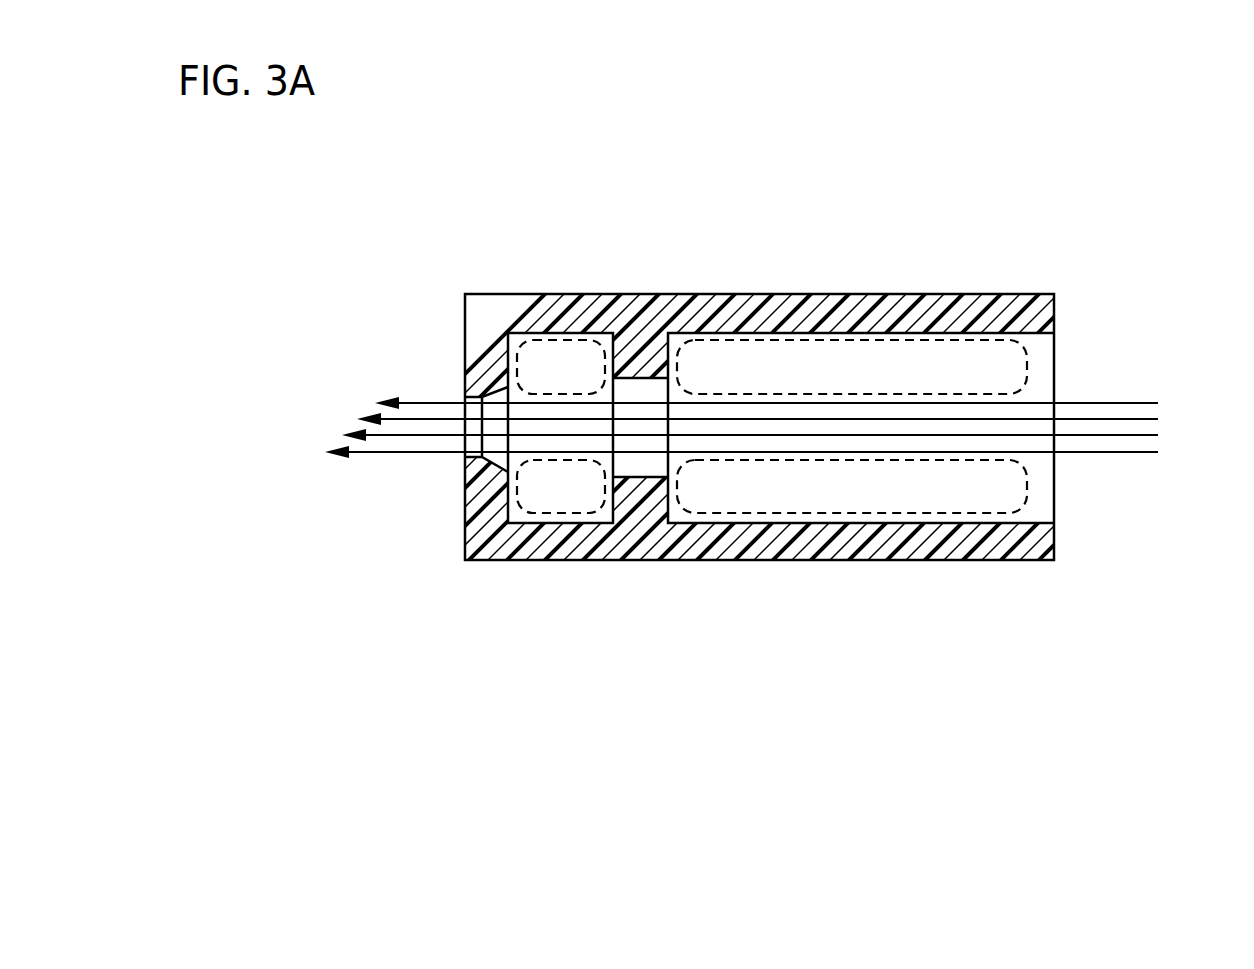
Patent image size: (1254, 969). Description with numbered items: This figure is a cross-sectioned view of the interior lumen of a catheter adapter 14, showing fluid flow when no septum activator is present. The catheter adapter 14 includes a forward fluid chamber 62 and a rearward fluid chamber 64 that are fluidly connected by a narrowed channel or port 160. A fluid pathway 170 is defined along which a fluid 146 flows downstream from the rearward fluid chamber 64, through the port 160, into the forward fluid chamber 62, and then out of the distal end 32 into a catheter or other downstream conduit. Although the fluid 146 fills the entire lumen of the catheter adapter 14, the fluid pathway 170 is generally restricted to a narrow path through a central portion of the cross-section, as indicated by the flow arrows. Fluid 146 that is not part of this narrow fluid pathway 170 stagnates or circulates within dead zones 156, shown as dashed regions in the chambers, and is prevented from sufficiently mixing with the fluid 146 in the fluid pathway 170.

The catheter adapter 14 is at (667, 294).
The distal end 32 is at (465, 398).
The forward fluid chamber 62 is at (522, 337).
The rearward fluid chamber 64 is at (1037, 357).
The fluid 146 is at (1112, 452).
The dead zones 156 is at (565, 362).
The narrowed channel or port 160 is at (640, 475).
The fluid pathway 170 is at (390, 452).